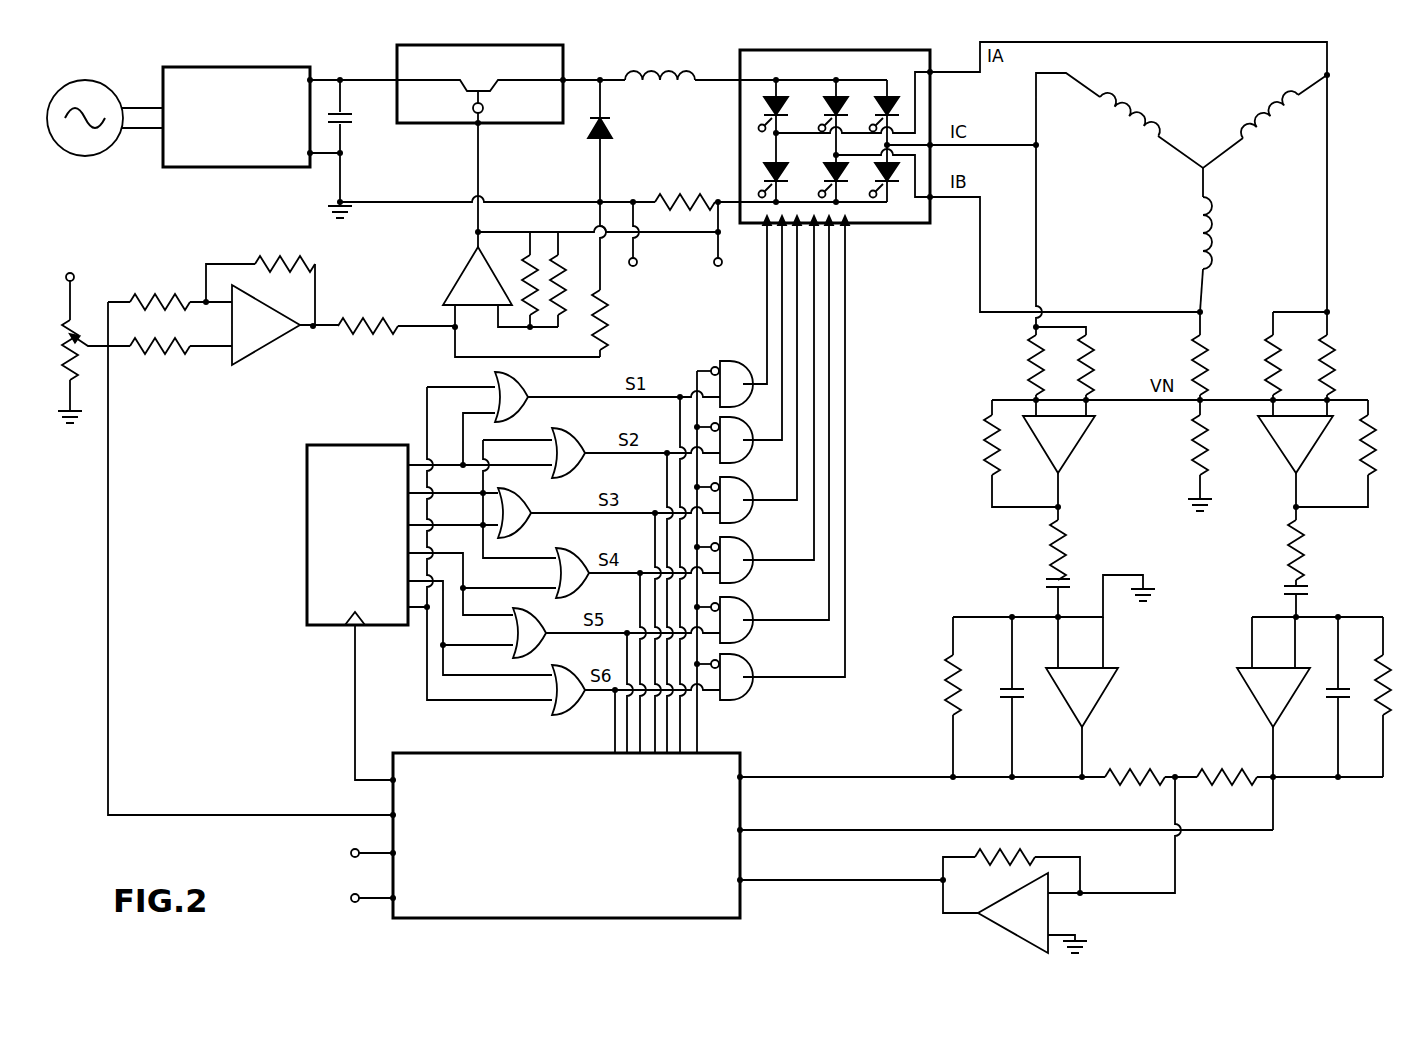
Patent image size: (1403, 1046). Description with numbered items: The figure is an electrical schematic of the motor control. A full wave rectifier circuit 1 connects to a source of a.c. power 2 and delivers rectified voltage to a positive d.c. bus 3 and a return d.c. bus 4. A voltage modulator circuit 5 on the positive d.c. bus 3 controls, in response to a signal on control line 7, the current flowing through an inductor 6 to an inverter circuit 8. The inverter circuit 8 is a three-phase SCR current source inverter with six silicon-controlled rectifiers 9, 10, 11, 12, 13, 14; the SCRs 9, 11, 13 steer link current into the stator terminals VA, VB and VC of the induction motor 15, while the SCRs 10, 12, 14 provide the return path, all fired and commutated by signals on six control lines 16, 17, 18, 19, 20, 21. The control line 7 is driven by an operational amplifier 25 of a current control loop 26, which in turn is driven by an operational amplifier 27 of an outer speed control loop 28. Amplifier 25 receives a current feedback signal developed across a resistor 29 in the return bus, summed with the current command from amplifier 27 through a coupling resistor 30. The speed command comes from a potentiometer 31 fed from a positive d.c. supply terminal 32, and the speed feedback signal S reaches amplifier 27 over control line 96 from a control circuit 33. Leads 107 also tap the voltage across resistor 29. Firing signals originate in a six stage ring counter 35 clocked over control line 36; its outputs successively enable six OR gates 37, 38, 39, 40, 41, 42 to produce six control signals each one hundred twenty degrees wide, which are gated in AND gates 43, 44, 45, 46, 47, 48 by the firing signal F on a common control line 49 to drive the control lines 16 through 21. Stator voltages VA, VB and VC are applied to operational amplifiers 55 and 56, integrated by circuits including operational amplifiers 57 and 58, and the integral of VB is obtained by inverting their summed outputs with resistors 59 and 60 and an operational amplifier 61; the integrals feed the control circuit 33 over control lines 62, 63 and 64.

The full wave rectifier circuit 1 is at (215, 168).
The source of a.c. power 2 is at (100, 80).
The positive d.c. bus 3 is at (330, 72).
The return d.c. bus 4 is at (345, 198).
The voltage modulator circuit 5 is at (565, 55).
The inductor 6 is at (665, 65).
The control line 7 is at (480, 160).
The inverter circuit 8 is at (932, 60).
The silicon-controlled rectifier 9 is at (800, 97).
The silicon-controlled rectifier 10 is at (780, 165).
The silicon-controlled rectifier 11 is at (838, 100).
The silicon-controlled rectifier 12 is at (860, 168).
The silicon-controlled rectifier 13 is at (889, 100).
The silicon-controlled rectifier 14 is at (892, 172).
The induction motor 15 is at (1148, 212).
The control line 16 is at (767, 305).
The control line 17 is at (775, 330).
The control line 18 is at (797, 298).
The control line 19 is at (814, 325).
The control line 20 is at (829, 352).
The control line 21 is at (845, 383).
The operational amplifier 25 is at (460, 252).
The current control loop 26 is at (608, 282).
The operational amplifier 27 is at (258, 352).
The speed control loop 28 is at (92, 715).
The resistor 29 is at (695, 197).
The coupling resistor 30 is at (352, 318).
The potentiometer 31 is at (58, 330).
The positive d.c. supply terminal 32 is at (73, 272).
The control circuit 33 is at (490, 747).
The six stage ring counter 35 is at (300, 497).
The control line 36 is at (355, 718).
The OR gate 37 is at (520, 380).
The OR gate 38 is at (578, 435).
The OR gate 39 is at (522, 495).
The OR gate 40 is at (578, 553).
The OR gate 41 is at (536, 618).
The OR gate 42 is at (570, 672).
The AND gate 43 is at (740, 400).
The AND gate 44 is at (740, 456).
The AND gate 45 is at (740, 516).
The AND gate 46 is at (740, 576).
The AND gate 47 is at (740, 636).
The AND gate 48 is at (740, 693).
The common control line 49 is at (700, 745).
The operational amplifier 55 is at (1072, 455).
The operational amplifier 56 is at (1280, 461).
The operational amplifier 57 is at (1100, 700).
The operational amplifier 58 is at (1263, 713).
The resistor 59 is at (1165, 760).
The resistor 60 is at (1215, 770).
The operational amplifier 61 is at (1000, 933).
The control line 62 is at (822, 827).
The control line 63 is at (828, 877).
The control line 64 is at (833, 775).
The control line 96 is at (108, 772).
The leads 107 is at (350, 893).